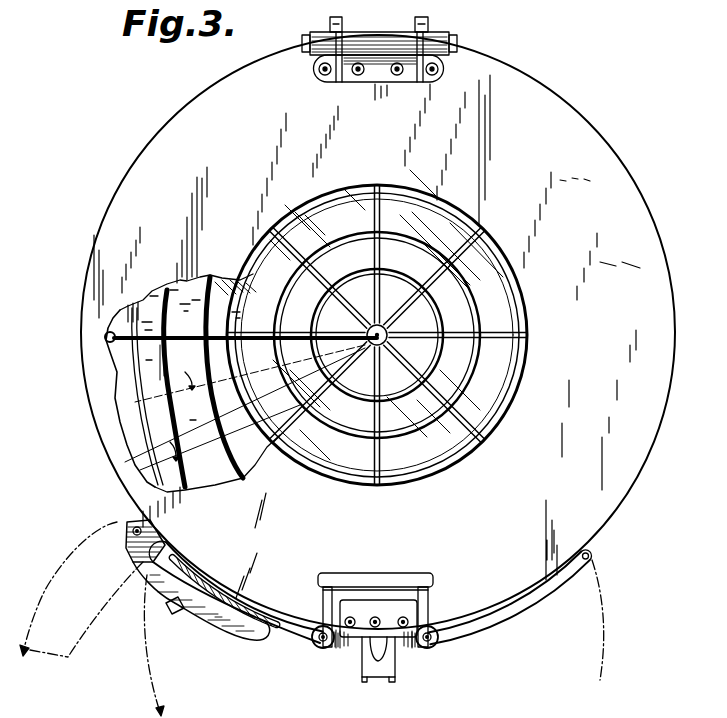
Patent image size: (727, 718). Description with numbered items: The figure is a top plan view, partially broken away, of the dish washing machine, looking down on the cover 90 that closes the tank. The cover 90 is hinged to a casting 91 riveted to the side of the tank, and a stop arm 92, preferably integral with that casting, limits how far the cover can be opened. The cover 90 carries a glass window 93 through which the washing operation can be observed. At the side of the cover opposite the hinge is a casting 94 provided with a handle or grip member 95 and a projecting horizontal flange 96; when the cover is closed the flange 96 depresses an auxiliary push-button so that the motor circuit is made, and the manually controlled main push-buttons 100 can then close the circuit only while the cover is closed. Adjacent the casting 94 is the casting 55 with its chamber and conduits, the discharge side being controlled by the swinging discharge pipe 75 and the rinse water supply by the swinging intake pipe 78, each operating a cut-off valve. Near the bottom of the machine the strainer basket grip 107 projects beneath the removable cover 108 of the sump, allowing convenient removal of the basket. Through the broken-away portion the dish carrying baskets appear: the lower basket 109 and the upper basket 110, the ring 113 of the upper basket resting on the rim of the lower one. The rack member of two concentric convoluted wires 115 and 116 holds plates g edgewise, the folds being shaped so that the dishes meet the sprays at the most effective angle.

The cover 90 is at (487, 77).
The casting 91 is at (447, 32).
The stop arm 92 is at (416, 22).
The glass window 93 is at (208, 300).
The casting 94 is at (337, 608).
The handle or grip member 95 is at (390, 580).
The projecting horizontal flange 96 is at (360, 650).
The main push-buttons 100 is at (390, 676).
The casting 55 is at (412, 650).
The swinging discharge pipe 75 is at (287, 633).
The swinging intake pipe 78 is at (485, 628).
The grip 107 is at (173, 614).
The removable cover 108 is at (213, 618).
The lower basket 109 is at (106, 343).
The upper basket 110 is at (153, 343).
The ring 113 is at (133, 380).
The convoluted wire 115 is at (218, 414).
The convoluted wire 116 is at (300, 308).
The plates g is at (176, 407).